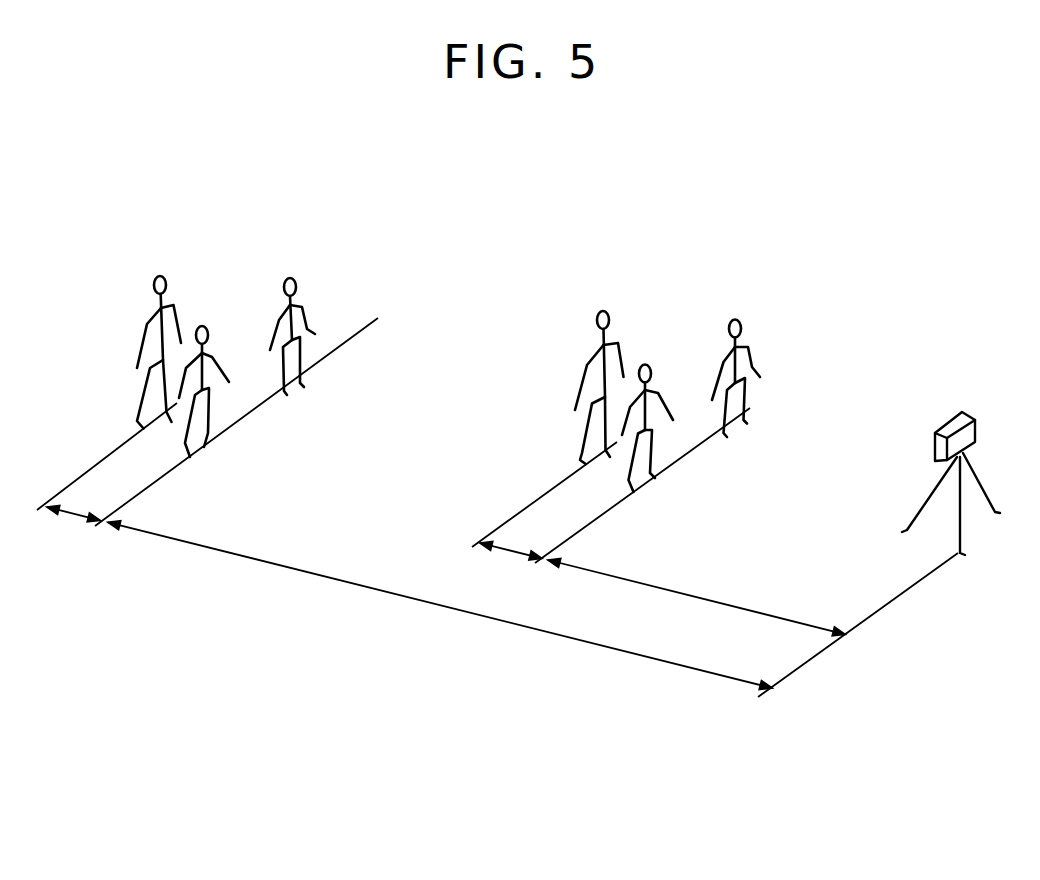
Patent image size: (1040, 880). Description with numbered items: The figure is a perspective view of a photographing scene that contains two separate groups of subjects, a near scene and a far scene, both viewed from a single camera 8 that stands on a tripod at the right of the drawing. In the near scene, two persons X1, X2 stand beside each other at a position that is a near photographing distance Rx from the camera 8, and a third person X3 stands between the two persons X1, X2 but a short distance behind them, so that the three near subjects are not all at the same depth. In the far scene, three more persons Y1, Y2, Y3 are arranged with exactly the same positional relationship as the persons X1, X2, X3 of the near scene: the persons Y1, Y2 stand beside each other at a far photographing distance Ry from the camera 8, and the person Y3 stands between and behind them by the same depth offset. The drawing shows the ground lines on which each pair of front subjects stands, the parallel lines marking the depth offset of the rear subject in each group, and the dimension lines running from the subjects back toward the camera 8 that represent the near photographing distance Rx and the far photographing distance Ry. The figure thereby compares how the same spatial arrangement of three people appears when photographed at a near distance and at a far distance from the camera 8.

The camera 8 is at (945, 423).
The person X1 is at (657, 363).
The person X2 is at (742, 313).
The person X3 is at (607, 303).
The person Y1 is at (210, 327).
The person Y2 is at (302, 290).
The person Y3 is at (163, 274).
The near photographing distance Rx is at (696, 597).
The far photographing distance Ry is at (440, 605).